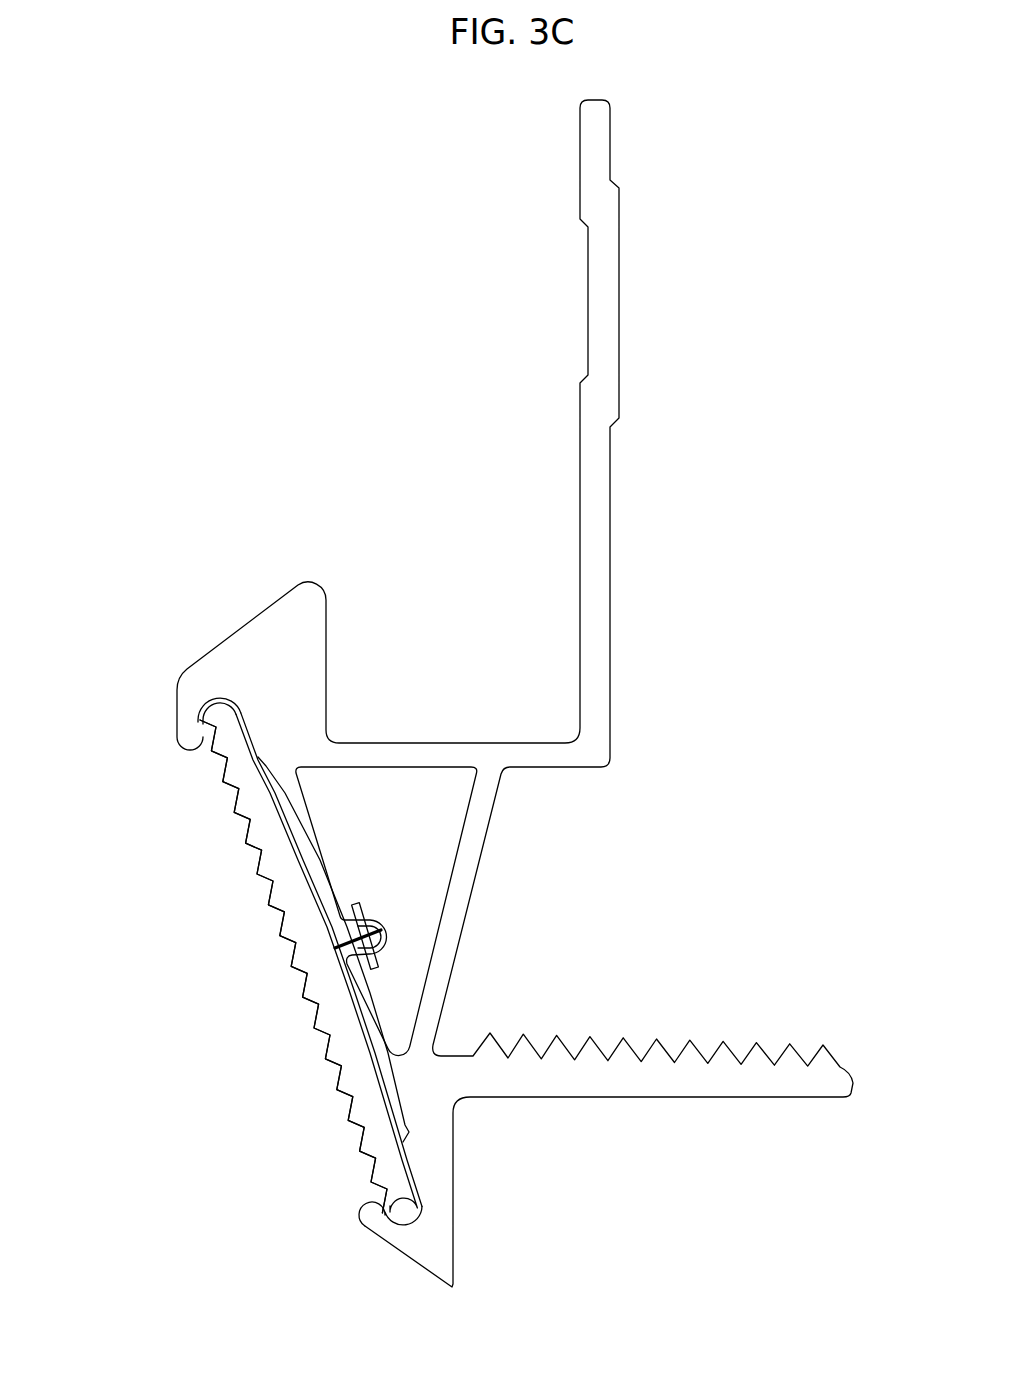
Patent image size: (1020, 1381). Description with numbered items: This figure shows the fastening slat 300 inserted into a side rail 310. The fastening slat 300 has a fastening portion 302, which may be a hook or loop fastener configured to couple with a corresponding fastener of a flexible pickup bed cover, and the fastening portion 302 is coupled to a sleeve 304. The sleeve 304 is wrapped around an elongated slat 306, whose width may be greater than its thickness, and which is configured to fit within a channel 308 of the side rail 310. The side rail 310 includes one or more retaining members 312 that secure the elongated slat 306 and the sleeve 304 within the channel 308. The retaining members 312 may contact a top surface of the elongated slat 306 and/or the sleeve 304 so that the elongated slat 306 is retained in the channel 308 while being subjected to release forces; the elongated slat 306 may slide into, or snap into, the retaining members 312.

The fastening slat 300 is at (185, 912).
The fastening portion 302 is at (290, 960).
The sleeve 304 is at (394, 1087).
The elongated slat 306 is at (343, 1006).
The channel 308 is at (278, 778).
The side rail 310 is at (456, 1174).
The retaining members 312 is at (386, 920).